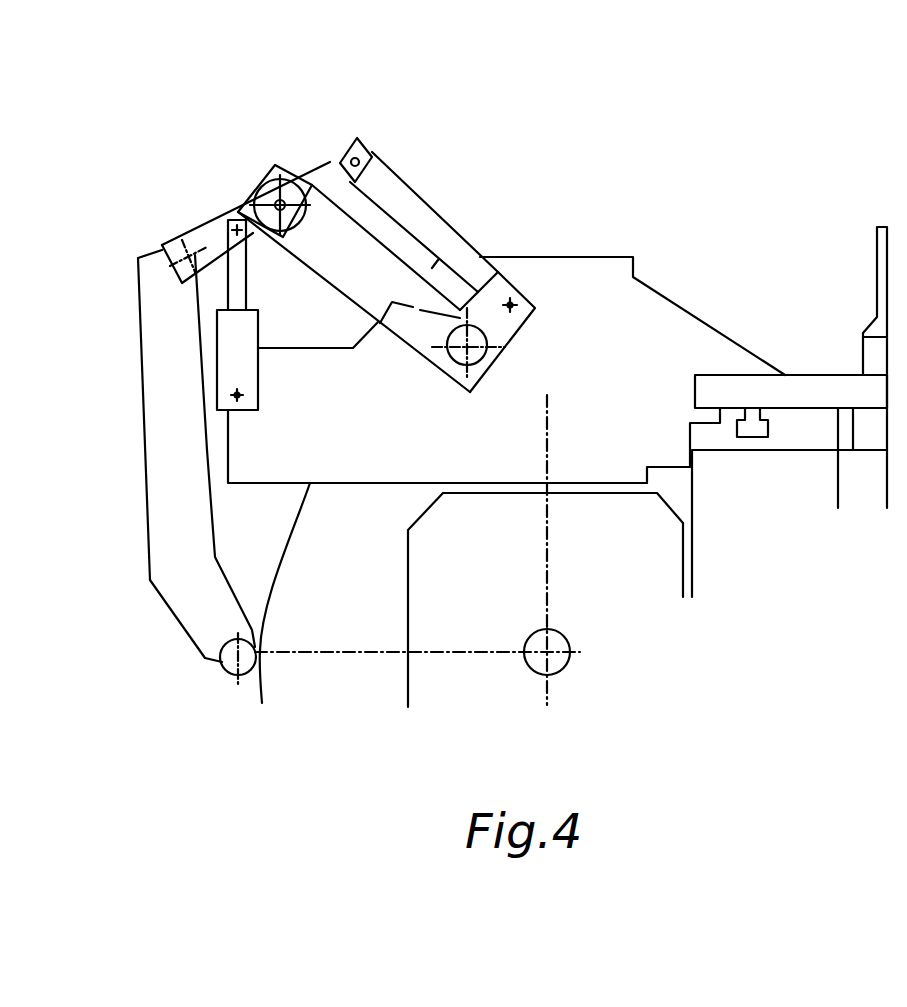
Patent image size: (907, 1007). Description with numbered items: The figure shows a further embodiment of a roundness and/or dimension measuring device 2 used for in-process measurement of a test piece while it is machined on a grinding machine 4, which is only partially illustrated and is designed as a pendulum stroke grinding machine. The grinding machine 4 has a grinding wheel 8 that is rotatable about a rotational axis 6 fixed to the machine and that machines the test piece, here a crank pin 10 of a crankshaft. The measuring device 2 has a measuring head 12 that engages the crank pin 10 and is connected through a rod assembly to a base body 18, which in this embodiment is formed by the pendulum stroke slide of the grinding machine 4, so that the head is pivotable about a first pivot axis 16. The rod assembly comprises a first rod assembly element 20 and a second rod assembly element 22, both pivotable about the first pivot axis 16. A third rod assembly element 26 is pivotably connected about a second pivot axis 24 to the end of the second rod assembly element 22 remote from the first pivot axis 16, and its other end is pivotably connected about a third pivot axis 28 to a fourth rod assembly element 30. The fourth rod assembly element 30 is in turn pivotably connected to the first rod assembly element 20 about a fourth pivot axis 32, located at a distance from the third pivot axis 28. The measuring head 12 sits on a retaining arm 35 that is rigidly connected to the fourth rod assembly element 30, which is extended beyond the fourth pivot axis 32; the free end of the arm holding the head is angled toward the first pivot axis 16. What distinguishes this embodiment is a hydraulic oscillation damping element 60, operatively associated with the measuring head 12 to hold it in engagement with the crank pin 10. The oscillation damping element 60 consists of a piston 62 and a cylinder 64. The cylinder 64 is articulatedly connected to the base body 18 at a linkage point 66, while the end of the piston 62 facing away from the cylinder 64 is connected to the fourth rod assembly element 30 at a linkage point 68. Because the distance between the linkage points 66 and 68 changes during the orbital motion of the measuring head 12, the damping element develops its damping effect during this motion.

The measuring device 2 is at (730, 100).
The grinding machine 4 is at (736, 290).
The rotational axis 6 is at (552, 640).
The grinding wheel 8 is at (272, 558).
The crank pin 10 is at (187, 668).
The measuring head 12 is at (162, 503).
The first pivot axis 16 is at (511, 364).
The base body 18 is at (593, 280).
The first rod assembly element 20 is at (350, 270).
The second rod assembly element 22 is at (507, 337).
The second pivot axis 24 is at (535, 308).
The third rod assembly element 26 is at (413, 217).
The third pivot axis 28 is at (367, 157).
The fourth rod assembly element 30 is at (317, 170).
The fourth pivot axis 32 is at (287, 200).
The retaining arm 35 is at (150, 503).
The oscillation damping element 60 is at (223, 282).
The piston 62 is at (215, 245).
The cylinder 64 is at (233, 355).
The linkage point 66 is at (240, 393).
The linkage point 68 is at (235, 222).